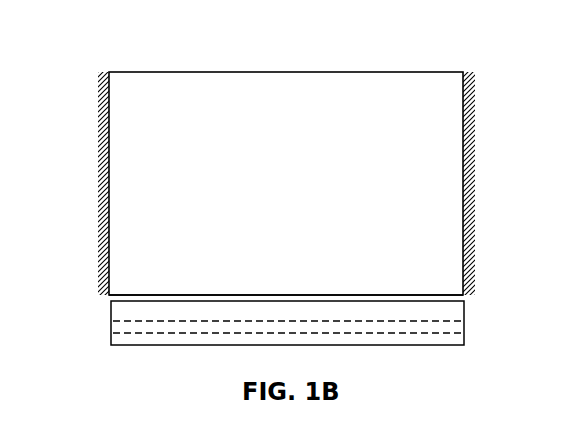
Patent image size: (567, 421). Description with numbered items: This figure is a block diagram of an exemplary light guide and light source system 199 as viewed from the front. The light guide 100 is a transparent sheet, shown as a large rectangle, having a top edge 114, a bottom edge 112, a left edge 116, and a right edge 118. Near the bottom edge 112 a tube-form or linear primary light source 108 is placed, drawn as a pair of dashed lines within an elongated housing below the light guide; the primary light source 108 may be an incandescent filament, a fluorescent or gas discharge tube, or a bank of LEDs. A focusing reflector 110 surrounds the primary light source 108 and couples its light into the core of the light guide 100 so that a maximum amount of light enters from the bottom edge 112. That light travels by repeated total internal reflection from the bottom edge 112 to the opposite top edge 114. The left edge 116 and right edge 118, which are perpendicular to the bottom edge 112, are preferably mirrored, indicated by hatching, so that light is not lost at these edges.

The light guide and light source system 199 is at (67, 190).
The light guide 100 is at (286, 183).
The left edge 116 is at (110, 69).
The right edge 118 is at (464, 69).
The top edge 114 is at (476, 72).
The bottom edge 112 is at (476, 295).
The focusing reflector 110 is at (464, 345).
The primary light source 108 is at (450, 328).